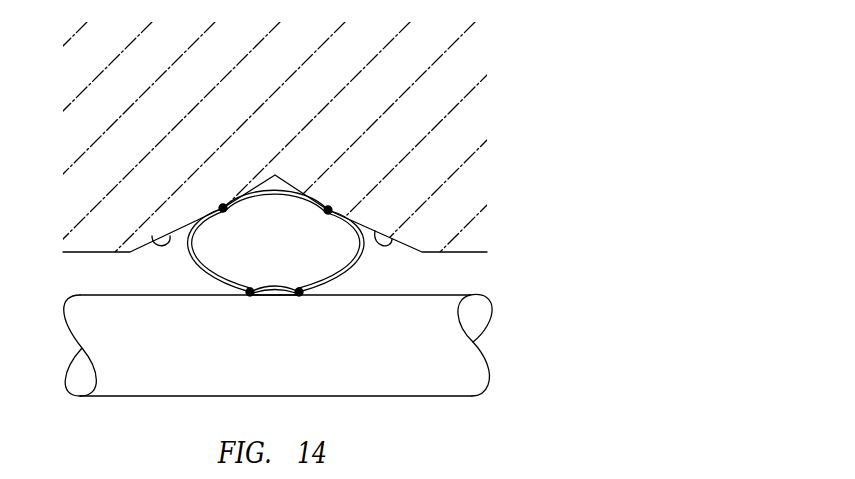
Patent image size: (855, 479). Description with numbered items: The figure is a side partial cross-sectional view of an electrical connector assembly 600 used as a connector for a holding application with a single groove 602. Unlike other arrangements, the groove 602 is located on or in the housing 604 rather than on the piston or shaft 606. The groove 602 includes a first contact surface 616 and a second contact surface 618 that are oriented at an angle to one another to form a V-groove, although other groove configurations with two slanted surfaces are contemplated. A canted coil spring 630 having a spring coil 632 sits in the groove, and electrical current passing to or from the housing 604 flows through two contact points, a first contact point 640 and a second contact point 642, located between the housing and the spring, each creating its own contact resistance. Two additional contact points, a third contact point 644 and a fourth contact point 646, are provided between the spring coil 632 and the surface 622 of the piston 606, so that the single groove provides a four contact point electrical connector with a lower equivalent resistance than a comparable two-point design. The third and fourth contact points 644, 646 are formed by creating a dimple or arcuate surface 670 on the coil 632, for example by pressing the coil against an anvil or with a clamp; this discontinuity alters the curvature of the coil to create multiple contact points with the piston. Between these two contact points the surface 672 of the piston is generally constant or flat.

The electrical connector assembly 600 is at (530, 156).
The groove 602 is at (268, 184).
The housing 604 is at (456, 195).
The piston or shaft 606 is at (460, 388).
The first contact surface 616 is at (152, 236).
The second contact surface 618 is at (392, 238).
The surface of the piston 622 is at (112, 295).
The canted coil spring 630 is at (361, 263).
The spring coil 632 is at (337, 278).
The first contact point 640 is at (223, 205).
The second contact point 642 is at (328, 207).
The third contact point 644 is at (249, 295).
The fourth contact point 646 is at (302, 296).
The dimple or arcuate surface 670 is at (271, 284).
The surface 672 is at (275, 298).